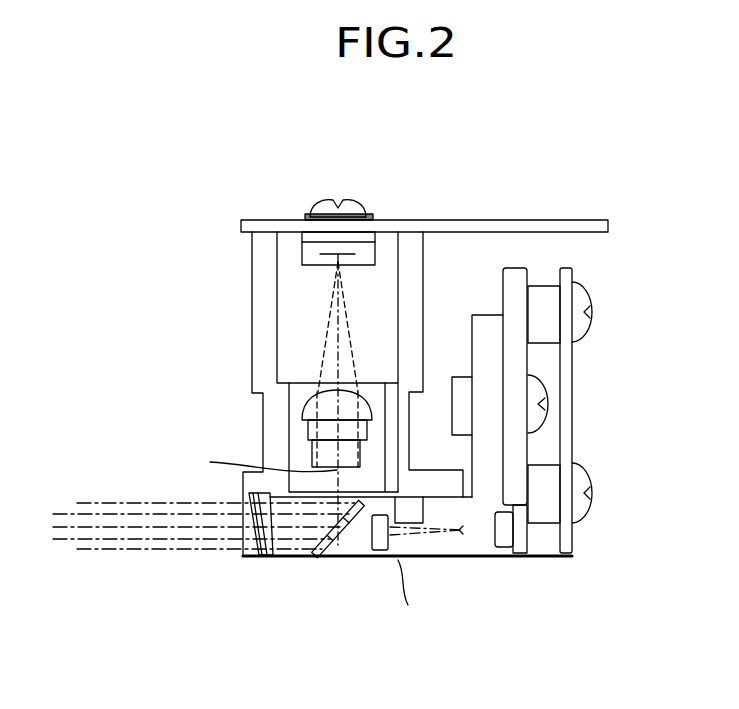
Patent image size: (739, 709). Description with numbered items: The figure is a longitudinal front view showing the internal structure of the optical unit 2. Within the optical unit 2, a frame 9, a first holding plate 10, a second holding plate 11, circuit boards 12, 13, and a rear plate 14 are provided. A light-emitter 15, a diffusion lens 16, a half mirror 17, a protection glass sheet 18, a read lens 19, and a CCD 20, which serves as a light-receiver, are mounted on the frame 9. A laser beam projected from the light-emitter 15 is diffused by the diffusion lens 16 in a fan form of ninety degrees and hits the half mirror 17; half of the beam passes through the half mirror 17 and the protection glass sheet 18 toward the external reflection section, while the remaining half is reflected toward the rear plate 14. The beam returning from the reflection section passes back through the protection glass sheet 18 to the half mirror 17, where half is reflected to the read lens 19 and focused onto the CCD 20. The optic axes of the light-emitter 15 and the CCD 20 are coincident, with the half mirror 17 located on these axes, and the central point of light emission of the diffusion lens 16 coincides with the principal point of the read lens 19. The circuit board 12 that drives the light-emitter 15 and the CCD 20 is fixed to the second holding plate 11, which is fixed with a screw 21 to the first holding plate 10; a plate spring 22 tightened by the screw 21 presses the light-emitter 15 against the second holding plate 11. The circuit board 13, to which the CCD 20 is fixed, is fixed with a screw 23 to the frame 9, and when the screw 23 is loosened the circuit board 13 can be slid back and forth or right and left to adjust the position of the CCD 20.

The optical unit 2 is at (575, 204).
The frame 9 is at (252, 302).
The first holding plate 10 is at (485, 315).
The second holding plate 11 is at (515, 268).
The circuit board 12 is at (572, 372).
The circuit board 13 is at (262, 220).
The rear plate 14 is at (445, 558).
The light-emitter 15 is at (508, 556).
The diffusion lens 16 is at (377, 556).
The half mirror 17 is at (322, 558).
The protection glass sheet 18 is at (243, 483).
The read lens 19 is at (308, 428).
The CCD 20 is at (302, 258).
The screw 21 is at (548, 406).
The plate spring 22 is at (528, 453).
The screw 23 is at (338, 205).